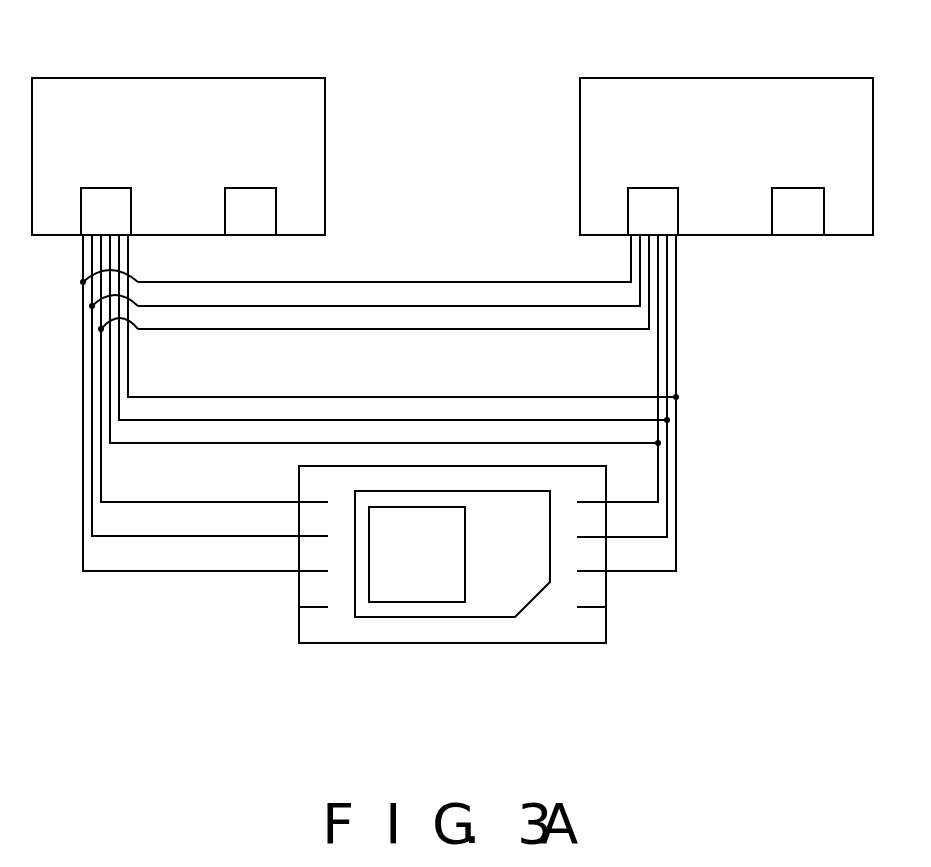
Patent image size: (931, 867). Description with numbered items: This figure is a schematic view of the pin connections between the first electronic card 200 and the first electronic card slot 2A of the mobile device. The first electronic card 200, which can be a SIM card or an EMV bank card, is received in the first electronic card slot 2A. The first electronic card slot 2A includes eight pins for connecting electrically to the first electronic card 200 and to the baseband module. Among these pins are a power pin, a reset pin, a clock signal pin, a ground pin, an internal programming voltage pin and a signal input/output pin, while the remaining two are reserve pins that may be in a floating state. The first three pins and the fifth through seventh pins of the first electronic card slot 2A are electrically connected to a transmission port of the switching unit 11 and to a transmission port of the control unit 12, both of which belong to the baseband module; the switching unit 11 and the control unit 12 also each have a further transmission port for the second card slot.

The switching unit 11 is at (174, 78).
The control unit 12 is at (722, 78).
The first electronic card slot 2A is at (522, 643).
The first electronic card 200 is at (427, 617).